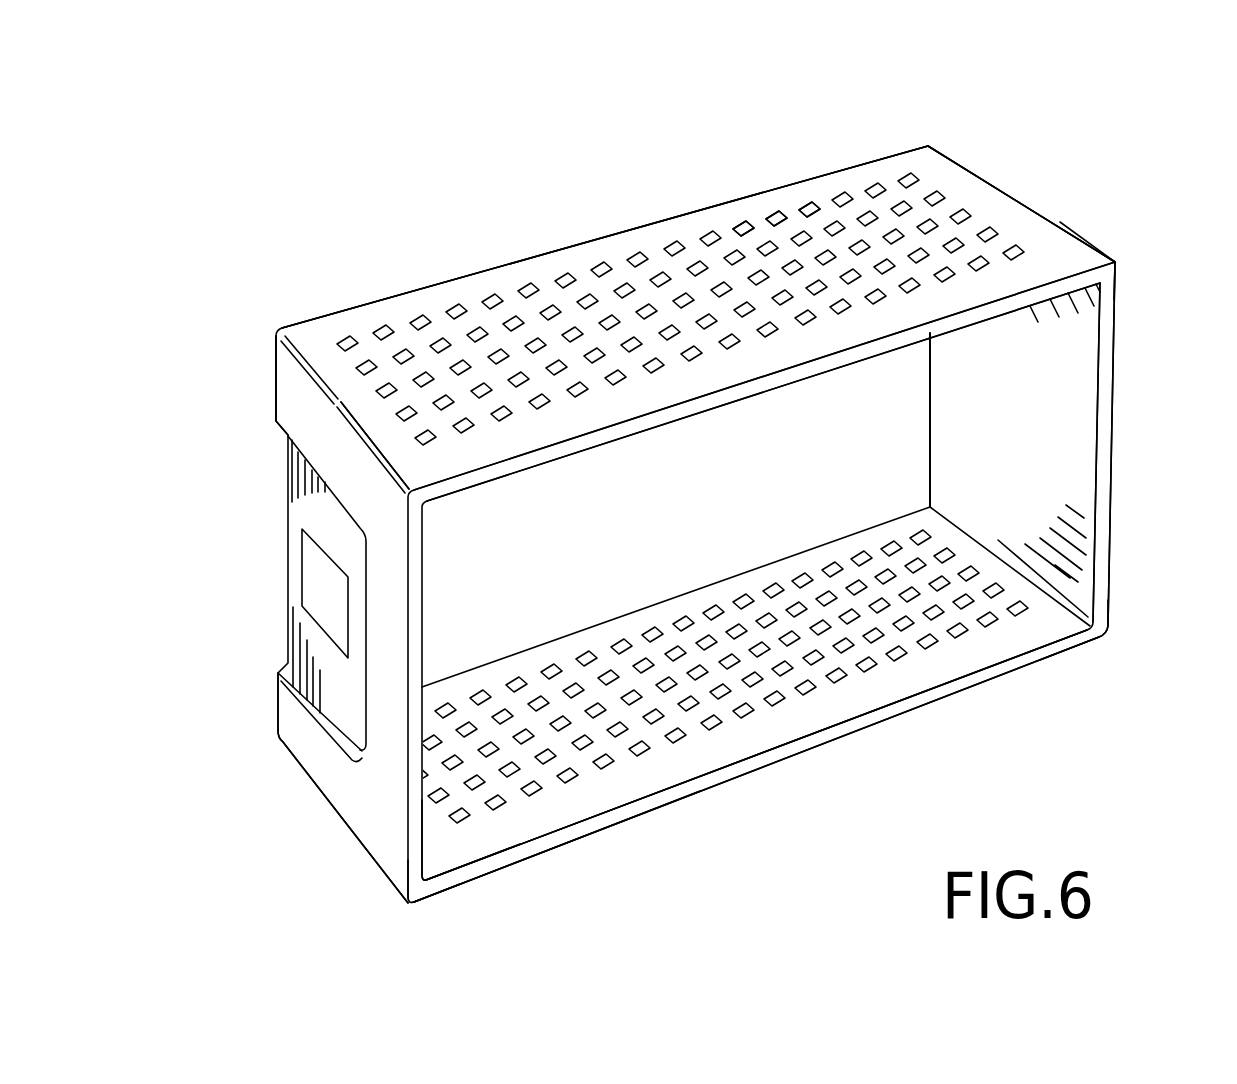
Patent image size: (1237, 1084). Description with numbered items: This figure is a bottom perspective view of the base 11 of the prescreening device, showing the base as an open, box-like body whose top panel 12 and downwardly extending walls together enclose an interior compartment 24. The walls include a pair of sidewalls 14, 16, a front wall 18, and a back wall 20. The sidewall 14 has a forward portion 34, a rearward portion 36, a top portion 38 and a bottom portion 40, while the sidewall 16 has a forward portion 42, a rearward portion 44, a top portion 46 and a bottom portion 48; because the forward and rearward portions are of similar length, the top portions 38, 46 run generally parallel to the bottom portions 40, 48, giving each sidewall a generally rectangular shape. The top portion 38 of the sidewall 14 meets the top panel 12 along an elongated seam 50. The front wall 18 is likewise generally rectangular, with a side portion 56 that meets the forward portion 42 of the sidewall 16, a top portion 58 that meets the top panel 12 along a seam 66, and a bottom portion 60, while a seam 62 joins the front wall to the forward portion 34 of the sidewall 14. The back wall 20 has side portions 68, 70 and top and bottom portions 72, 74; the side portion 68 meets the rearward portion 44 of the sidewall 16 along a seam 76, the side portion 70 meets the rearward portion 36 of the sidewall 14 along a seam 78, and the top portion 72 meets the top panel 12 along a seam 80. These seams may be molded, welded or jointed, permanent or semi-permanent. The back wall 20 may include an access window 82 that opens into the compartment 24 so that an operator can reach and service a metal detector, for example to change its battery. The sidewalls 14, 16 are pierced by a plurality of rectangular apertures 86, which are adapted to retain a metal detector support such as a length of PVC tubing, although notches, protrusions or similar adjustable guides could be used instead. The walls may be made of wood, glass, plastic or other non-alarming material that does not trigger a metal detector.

The base 11 is at (1050, 130).
The top panel 12 is at (758, 519).
The sidewall 14 is at (916, 163).
The sidewall 16 is at (757, 734).
The front wall 18 is at (1067, 337).
The back wall 20 is at (297, 740).
The interior compartment 24 is at (1070, 435).
The forward portion 34 is at (1007, 213).
The rearward portion 36 is at (367, 416).
The top portion 38 is at (538, 272).
The bottom portion 40 is at (860, 322).
The forward portion 42 is at (1042, 622).
The rearward portion 44 is at (437, 860).
The top portion 46 is at (630, 627).
The bottom portion 48 is at (672, 752).
The elongated seam 50 is at (625, 228).
The side portion 56 is at (1040, 500).
The top portion 58 is at (956, 368).
The bottom portion 60 is at (1070, 394).
The seam 62 is at (1080, 236).
The seam 66 is at (932, 422).
The side portion 68 is at (335, 780).
The side portion 70 is at (337, 434).
The top portion 72 is at (299, 515).
The bottom portion 74 is at (393, 775).
The seam 76 is at (372, 859).
The seam 78 is at (316, 372).
The seam 80 is at (274, 404).
The access window 82 is at (322, 592).
The apertures 86 is at (808, 207).